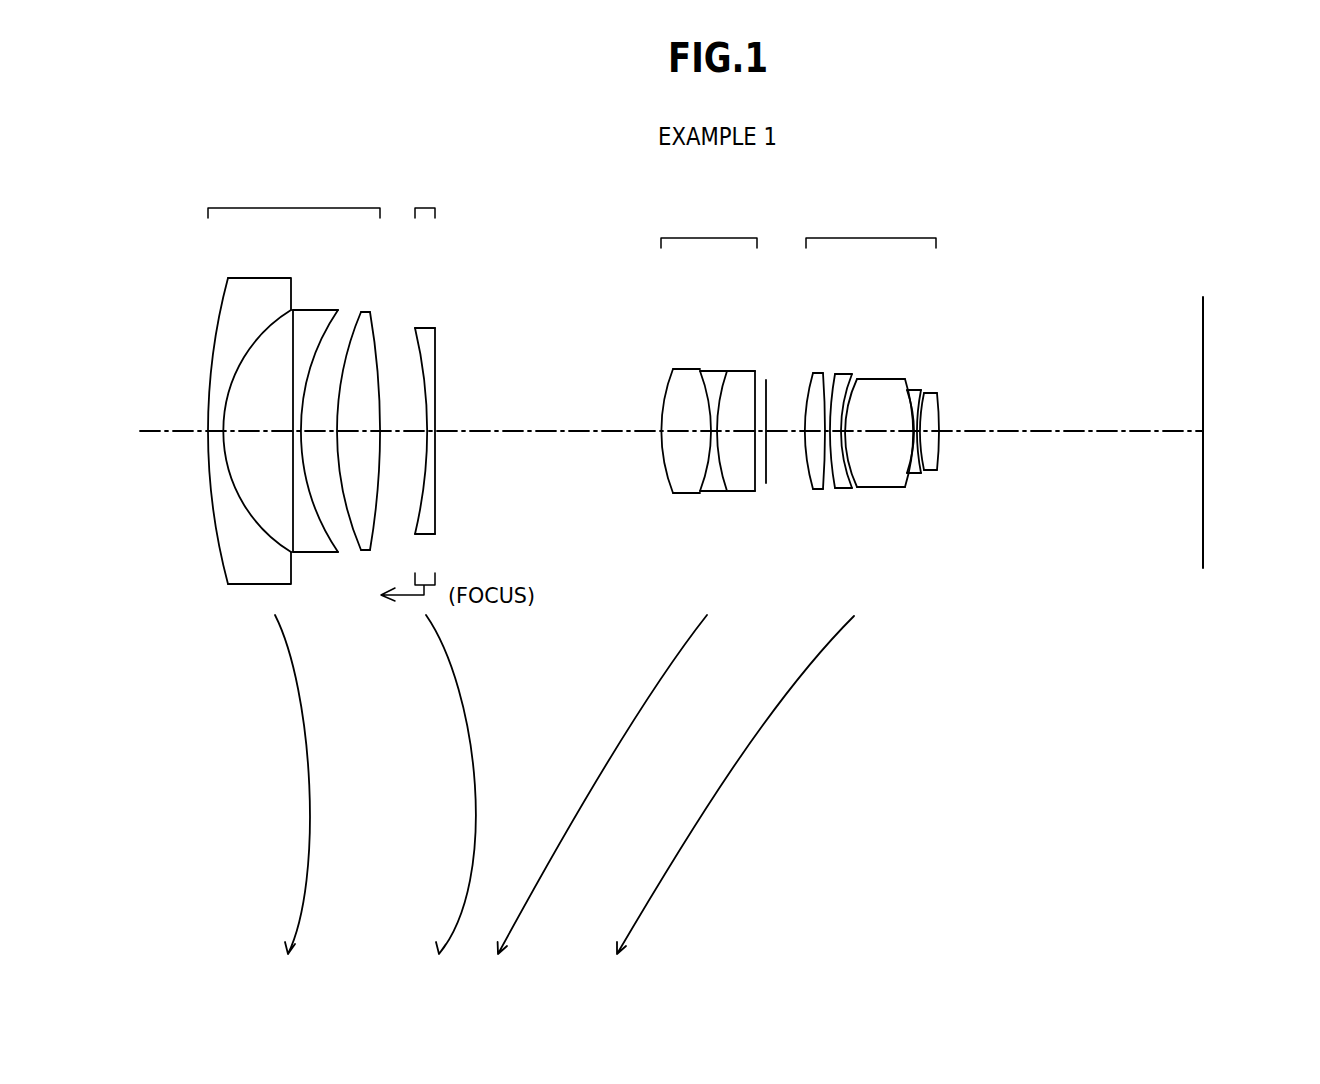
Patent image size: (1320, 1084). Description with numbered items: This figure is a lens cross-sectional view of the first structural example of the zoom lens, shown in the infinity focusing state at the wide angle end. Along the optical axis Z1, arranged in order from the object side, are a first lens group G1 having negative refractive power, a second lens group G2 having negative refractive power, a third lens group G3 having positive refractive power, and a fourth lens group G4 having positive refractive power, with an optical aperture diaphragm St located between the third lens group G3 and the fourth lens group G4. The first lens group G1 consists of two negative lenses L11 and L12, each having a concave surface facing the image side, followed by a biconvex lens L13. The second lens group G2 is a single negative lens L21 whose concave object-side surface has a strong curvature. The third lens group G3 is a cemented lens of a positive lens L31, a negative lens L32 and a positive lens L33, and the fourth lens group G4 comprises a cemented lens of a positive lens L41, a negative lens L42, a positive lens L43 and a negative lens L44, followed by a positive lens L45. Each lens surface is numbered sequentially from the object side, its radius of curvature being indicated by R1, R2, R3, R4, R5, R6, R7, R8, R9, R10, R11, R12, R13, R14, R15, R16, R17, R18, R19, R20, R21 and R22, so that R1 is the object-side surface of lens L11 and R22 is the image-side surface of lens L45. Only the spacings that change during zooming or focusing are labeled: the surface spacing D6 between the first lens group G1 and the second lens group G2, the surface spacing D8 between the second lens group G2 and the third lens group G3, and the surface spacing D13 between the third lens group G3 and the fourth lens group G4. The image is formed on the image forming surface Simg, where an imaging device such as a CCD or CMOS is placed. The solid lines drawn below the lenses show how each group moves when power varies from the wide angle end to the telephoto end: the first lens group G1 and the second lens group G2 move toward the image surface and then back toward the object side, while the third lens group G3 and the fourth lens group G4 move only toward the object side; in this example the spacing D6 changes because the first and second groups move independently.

The first lens group G1 is at (294, 197).
The second lens group G2 is at (425, 197).
The third lens group G3 is at (709, 227).
The fourth lens group G4 is at (871, 227).
The negative lens L11 is at (232, 423).
The negative lens L12 is at (310, 437).
The biconvex lens L13 is at (364, 423).
The negative lens L21 is at (430, 404).
The positive lens L31 is at (671, 424).
The negative lens L32 is at (713, 425).
The positive lens L33 is at (741, 424).
The positive lens L41 is at (800, 399).
The negative lens L42 is at (828, 451).
The positive lens L43 is at (874, 424).
The negative lens L44 is at (926, 438).
The positive lens L45 is at (975, 414).
The radius of curvature of first surface R1 is at (212, 498).
The radius of curvature of second surface R2 is at (237, 482).
The radius of curvature of third surface R3 is at (293, 445).
The radius of curvature of fourth surface R4 is at (336, 442).
The radius of curvature of fifth surface R5 is at (335, 442).
The radius of curvature of sixth surface R6 is at (384, 437).
The radius of curvature of seventh surface R7 is at (407, 443).
The radius of curvature of eighth surface R8 is at (434, 440).
The radius of curvature of ninth surface R9 is at (657, 443).
The radius of curvature of tenth surface R10 is at (708, 447).
The radius of curvature of eleventh surface R11 is at (713, 450).
The radius of curvature of twelfth surface R12 is at (757, 447).
The radius of curvature of thirteenth surface R13 is at (809, 431).
The radius of curvature of fourteenth surface R14 is at (807, 440).
The radius of curvature of fifteenth surface R15 is at (822, 443).
The radius of curvature of sixteenth surface R16 is at (832, 473).
The radius of curvature of seventeenth surface R17 is at (836, 450).
The radius of curvature of eighteenth surface R18 is at (910, 450).
The radius of curvature of nineteenth surface R19 is at (912, 480).
The radius of curvature of twentieth surface R20 is at (928, 443).
The radius of curvature of twenty-first surface R21 is at (928, 440).
The radius of curvature of twenty-second surface R22 is at (935, 440).
The surface spacing D6 is at (397, 415).
The surface spacing D8 is at (548, 416).
The surface spacing D13 is at (785, 417).
The aperture diaphragm St is at (770, 386).
The image forming surface Simg is at (1203, 321).
The optical axis Z1 is at (170, 436).